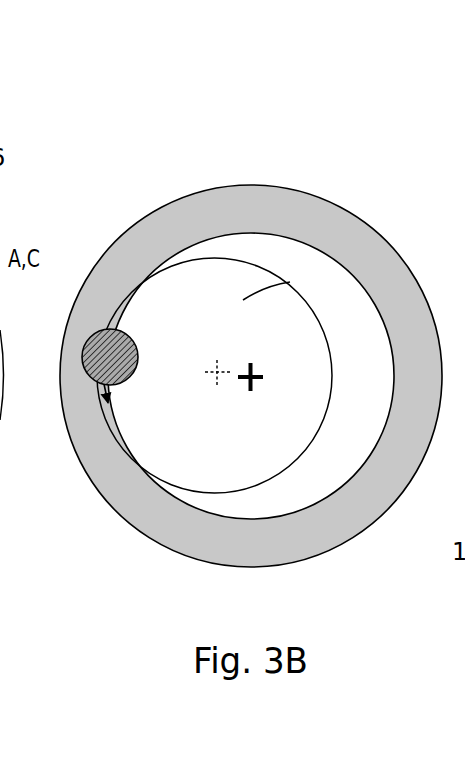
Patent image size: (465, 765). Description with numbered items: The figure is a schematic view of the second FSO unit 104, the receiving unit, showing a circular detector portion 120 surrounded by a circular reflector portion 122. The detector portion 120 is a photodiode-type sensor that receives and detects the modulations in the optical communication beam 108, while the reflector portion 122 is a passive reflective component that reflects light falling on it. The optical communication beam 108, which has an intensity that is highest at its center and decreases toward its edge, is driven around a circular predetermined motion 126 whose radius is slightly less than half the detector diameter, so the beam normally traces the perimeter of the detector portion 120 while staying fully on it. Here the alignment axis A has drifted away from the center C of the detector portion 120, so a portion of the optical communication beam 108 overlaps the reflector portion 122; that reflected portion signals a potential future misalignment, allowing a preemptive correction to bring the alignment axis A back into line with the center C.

The second FSO unit 104 is at (231, 303).
The reflector portion 122 is at (178, 256).
The detector portion 120 is at (214, 317).
The predetermined motion 126 is at (243, 262).
The optical communication beam 108 is at (92, 380).
The alignment axis A is at (217, 371).
The center C is at (252, 376).